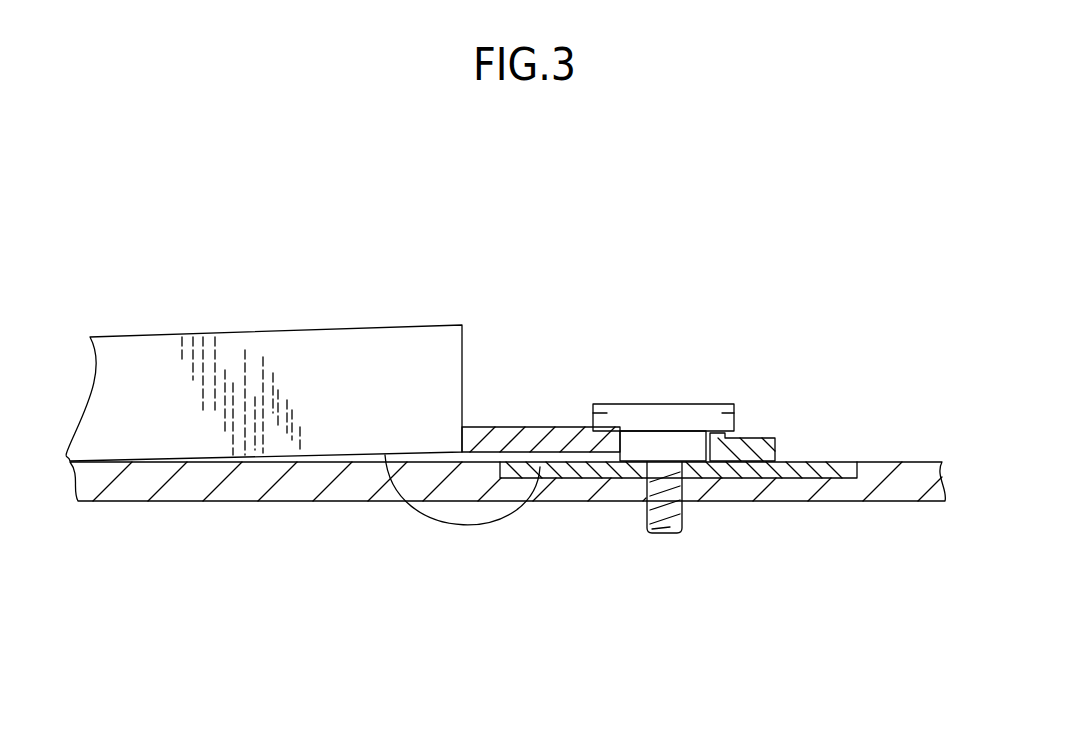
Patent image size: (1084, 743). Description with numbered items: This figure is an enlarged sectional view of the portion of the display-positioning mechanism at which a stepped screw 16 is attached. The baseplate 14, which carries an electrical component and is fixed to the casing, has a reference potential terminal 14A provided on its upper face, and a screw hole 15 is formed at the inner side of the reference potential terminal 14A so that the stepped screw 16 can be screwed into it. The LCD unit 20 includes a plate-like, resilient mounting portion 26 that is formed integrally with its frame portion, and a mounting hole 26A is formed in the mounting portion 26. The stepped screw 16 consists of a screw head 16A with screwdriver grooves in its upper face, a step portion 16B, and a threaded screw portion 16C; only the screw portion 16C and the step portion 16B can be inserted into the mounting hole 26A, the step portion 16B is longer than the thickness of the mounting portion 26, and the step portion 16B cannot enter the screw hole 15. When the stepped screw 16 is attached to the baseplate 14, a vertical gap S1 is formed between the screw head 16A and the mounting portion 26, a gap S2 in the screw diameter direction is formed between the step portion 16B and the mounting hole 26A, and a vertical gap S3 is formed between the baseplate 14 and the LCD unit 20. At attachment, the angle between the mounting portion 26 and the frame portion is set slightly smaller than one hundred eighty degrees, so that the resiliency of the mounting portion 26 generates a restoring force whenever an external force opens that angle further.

The baseplate 14 is at (907, 474).
The reference potential terminal 14A is at (600, 470).
The screw hole 15 is at (672, 487).
The stepped screw 16 is at (670, 404).
The screw head 16A is at (738, 433).
The step portion 16B is at (652, 447).
The screw portion 16C is at (668, 528).
The LCD unit 20 is at (369, 327).
The mounting portion 26 is at (520, 437).
The mounting hole 26A is at (598, 431).
The gap S1 is at (718, 437).
The gap S2 is at (712, 435).
The gap S3 is at (408, 497).